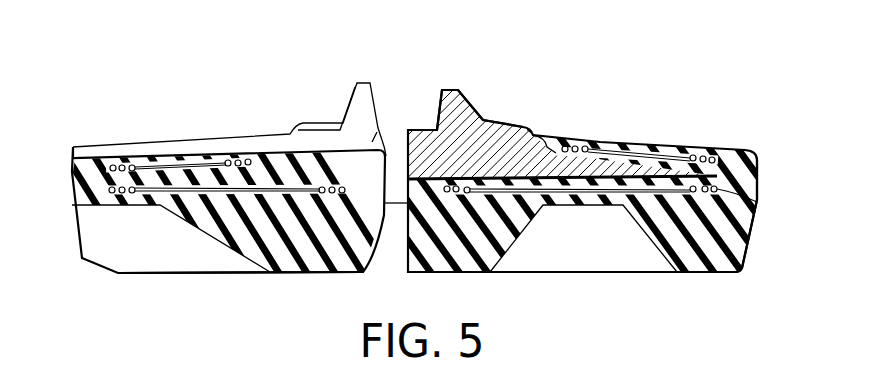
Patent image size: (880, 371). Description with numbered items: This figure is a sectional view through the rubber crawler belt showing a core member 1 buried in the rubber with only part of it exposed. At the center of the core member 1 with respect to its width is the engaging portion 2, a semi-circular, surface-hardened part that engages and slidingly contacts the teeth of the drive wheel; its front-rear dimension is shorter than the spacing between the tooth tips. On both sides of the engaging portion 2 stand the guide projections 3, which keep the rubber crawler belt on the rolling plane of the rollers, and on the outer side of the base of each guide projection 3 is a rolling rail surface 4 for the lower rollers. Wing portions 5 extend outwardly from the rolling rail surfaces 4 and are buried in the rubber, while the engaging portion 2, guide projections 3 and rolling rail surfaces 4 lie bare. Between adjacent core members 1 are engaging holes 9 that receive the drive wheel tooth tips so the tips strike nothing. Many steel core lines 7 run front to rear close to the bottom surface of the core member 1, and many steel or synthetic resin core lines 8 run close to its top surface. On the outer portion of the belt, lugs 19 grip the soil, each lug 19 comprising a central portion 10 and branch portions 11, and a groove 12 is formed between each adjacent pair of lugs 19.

The core member 1 is at (416, 166).
The engaging portion 2 is at (399, 130).
The guide projection 3 is at (444, 90).
The rolling rail surface 4 is at (503, 122).
The wing portion 5 is at (552, 152).
The steel core line 7 is at (756, 213).
The core line 8 is at (712, 157).
The engaging hole 9 is at (395, 203).
The central portion 10 is at (302, 273).
The branch portion 11 is at (720, 273).
The groove 12 is at (155, 246).
The lug 19 is at (760, 247).